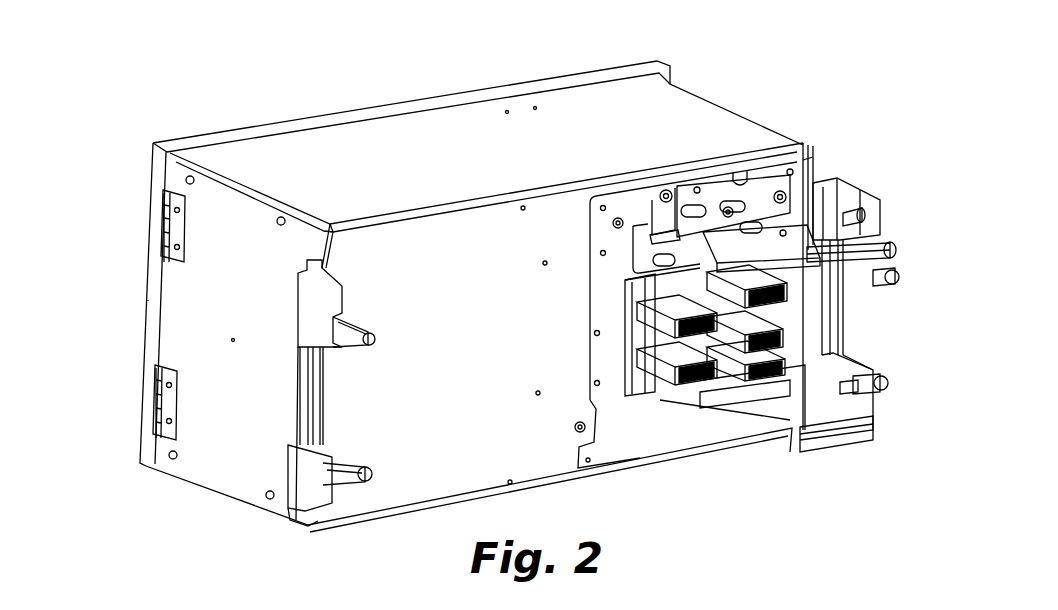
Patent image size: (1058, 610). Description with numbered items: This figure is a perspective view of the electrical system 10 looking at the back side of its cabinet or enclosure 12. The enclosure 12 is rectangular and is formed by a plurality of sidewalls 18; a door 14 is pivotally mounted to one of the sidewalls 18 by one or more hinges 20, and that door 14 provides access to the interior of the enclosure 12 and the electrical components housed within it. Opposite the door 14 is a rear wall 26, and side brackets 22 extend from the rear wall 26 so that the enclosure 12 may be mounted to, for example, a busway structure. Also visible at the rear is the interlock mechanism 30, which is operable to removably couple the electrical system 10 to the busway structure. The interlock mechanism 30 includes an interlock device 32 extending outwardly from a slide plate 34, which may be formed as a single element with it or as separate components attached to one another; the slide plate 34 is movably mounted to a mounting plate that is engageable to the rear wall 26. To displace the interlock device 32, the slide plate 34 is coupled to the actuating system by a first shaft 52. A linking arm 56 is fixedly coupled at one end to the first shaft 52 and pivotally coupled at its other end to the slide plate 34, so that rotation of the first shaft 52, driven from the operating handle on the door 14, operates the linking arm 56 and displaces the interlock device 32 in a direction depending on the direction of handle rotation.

The electrical system 10 is at (134, 103).
The enclosure 12 is at (136, 250).
The door 14 is at (221, 130).
The sidewalls 18 is at (453, 169).
The hinges 20 is at (160, 216).
The side brackets 22 is at (868, 186).
The rear wall 26 is at (470, 324).
The interlock mechanism 30 is at (847, 148).
The interlock device 32 is at (800, 312).
The slide plate 34 is at (750, 190).
The first shaft 52 is at (662, 182).
The linking arm 56 is at (648, 207).